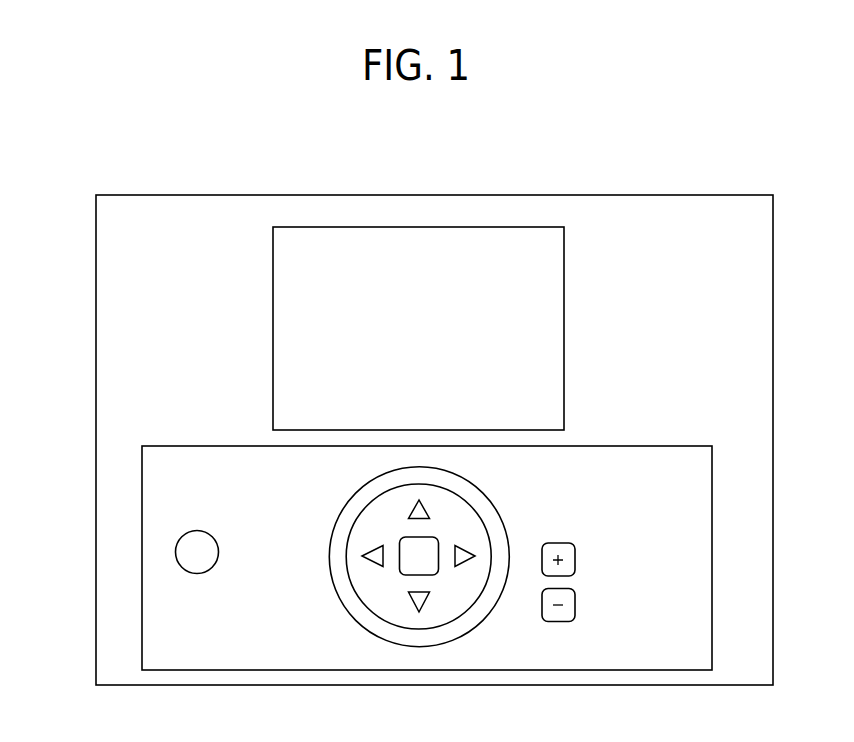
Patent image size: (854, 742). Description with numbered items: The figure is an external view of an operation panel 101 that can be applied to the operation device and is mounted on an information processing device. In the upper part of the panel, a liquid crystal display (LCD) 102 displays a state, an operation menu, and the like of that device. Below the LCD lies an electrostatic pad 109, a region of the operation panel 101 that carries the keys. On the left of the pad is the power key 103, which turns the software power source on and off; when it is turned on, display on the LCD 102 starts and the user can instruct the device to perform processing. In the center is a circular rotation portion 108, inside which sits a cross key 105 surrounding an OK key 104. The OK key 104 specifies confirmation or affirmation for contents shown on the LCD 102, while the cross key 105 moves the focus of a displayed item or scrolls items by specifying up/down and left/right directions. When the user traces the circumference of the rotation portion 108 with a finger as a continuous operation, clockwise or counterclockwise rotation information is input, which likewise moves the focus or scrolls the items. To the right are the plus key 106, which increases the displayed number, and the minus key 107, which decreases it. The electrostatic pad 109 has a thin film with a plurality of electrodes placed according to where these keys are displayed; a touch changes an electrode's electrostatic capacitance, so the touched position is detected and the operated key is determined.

The operation panel 101 is at (110, 303).
The liquid crystal display (LCD) 102 is at (288, 282).
The power key 103 is at (197, 573).
The OK key 104 is at (432, 537).
The cross key 105 is at (392, 531).
The plus key 106 is at (576, 556).
The minus key 107 is at (576, 601).
The rotation portion 108 is at (345, 594).
The electrostatic pad 109 is at (650, 446).